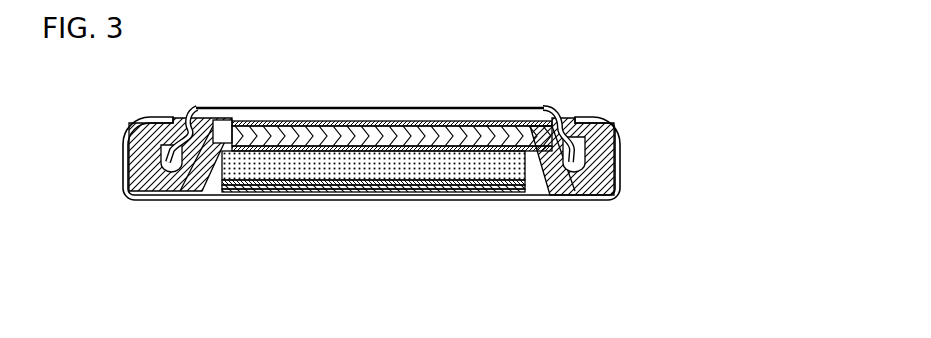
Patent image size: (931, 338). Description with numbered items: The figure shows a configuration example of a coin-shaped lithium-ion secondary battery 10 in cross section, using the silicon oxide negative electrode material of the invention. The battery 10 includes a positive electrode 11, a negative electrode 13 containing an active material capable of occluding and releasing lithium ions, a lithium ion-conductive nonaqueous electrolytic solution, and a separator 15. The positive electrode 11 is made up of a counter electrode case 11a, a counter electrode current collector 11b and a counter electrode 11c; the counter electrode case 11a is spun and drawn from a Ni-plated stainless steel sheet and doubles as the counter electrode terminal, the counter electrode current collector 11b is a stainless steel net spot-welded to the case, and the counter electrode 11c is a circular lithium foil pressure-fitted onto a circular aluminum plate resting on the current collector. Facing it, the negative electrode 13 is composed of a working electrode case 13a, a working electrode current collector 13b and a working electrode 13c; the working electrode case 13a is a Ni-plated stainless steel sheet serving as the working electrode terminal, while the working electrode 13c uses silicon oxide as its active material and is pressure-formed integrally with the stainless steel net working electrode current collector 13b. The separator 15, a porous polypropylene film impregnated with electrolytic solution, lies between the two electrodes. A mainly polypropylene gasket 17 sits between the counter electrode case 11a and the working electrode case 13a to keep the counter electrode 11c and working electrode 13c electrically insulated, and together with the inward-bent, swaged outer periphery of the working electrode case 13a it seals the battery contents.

The lithium-ion secondary battery 10 is at (113, 96).
The positive electrode 11 is at (392, 84).
The counter electrode case 11a is at (408, 107).
The counter electrode current collector 11b is at (455, 107).
The counter electrode 11c is at (398, 62).
The negative electrode 13 is at (373, 237).
The working electrode case 13a is at (525, 247).
The working electrode current collector 13b is at (433, 191).
The working electrode 13c is at (482, 182).
The separator 15 is at (212, 117).
The gasket 17 is at (583, 193).